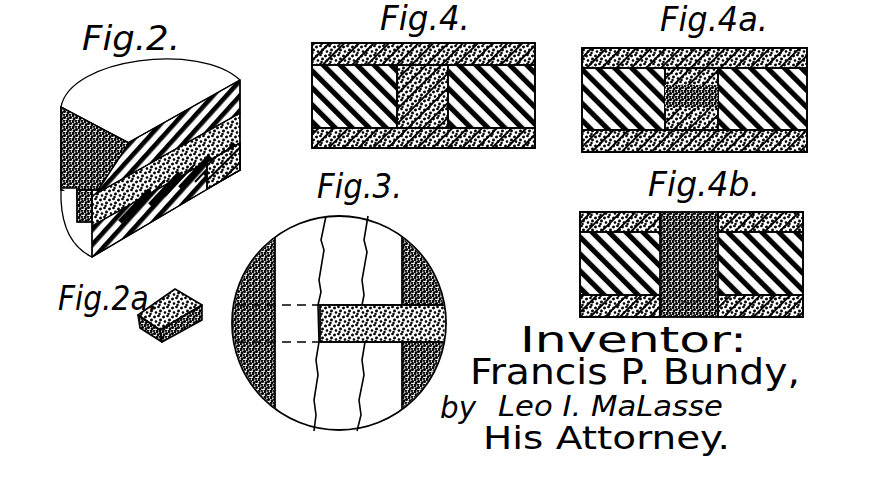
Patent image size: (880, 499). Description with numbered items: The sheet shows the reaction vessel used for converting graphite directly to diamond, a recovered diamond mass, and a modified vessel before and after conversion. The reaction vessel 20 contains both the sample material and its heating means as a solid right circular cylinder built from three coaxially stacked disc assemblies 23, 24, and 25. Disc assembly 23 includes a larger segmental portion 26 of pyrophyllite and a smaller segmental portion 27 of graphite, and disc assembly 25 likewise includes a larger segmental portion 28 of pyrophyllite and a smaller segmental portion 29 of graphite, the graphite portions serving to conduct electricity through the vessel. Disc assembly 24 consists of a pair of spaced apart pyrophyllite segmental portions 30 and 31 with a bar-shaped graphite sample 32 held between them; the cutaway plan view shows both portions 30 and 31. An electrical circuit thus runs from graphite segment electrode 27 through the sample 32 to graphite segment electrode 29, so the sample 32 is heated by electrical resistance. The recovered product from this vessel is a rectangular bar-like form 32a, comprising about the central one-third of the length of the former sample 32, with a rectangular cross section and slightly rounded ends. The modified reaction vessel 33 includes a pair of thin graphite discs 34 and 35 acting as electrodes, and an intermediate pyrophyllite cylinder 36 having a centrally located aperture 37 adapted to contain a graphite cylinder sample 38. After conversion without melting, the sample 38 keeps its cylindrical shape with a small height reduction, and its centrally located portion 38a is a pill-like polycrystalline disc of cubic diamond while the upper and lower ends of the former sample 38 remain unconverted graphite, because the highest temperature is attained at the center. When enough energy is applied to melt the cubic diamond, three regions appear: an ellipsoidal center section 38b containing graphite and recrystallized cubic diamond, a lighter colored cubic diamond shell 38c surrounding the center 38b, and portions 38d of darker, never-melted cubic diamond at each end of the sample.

In FIG. 2, the reaction vessel 20 is at (221, 57).
In FIG. 2, the disc assembly 23 is at (246, 92).
In FIG. 2, the disc assembly 24 is at (244, 120).
In FIG. 2, the disc assembly 25 is at (246, 147).
In FIG. 2, the segmental portion 26 is at (103, 100).
In FIG. 3, the segmental portion 26 is at (302, 407).
In FIG. 2, the segmental portion 27 is at (73, 135).
In FIG. 3, the segmental portion 27 is at (253, 352).
In FIG. 2, the segmental portion 28 is at (157, 212).
In FIG. 3, the segmental portion 28 is at (380, 398).
In FIG. 2, the segmental portion 29 is at (222, 178).
In FIG. 3, the segmental portion 29 is at (447, 360).
In FIG. 2, the segmental portion 30 is at (67, 187).
In FIG. 3, the segmental portion 30 is at (340, 233).
In FIG. 3, the segmental portion 31 is at (340, 412).
In FIG. 2, the graphite sample 32 is at (87, 203).
In FIG. 3, the graphite sample 32 is at (447, 320).
In FIG. 2A, the rectangular bar-like form 32a is at (138, 333).
In FIG. 4, the reaction vessel 33 is at (528, 35).
In FIG. 4A, the reaction vessel 33 is at (801, 46).
In FIG. 4B, the reaction vessel 33 is at (584, 213).
In FIG. 4, the graphite disc 34 is at (536, 48).
In FIG. 4A, the graphite disc 34 is at (803, 49).
In FIG. 4B, the graphite disc 34 is at (580, 223).
In FIG. 4, the graphite disc 35 is at (530, 148).
In FIG. 4A, the graphite disc 35 is at (804, 143).
In FIG. 4B, the graphite disc 35 is at (580, 305).
In FIG. 4, the intermediate pyrophyllite cylinder 36 is at (535, 97).
In FIG. 4A, the intermediate pyrophyllite cylinder 36 is at (804, 86).
In FIG. 4B, the intermediate pyrophyllite cylinder 36 is at (580, 275).
In FIG. 4, the aperture 37 is at (410, 68).
In FIG. 4, the sample 38 is at (425, 125).
In FIG. 4A, the cylindrical form 38a is at (680, 88).
In FIG. 4B, the ellipsoidal center section 38b is at (668, 258).
In FIG. 4B, the cubic diamond shell 38c is at (661, 222).
In FIG. 4B, the portions of darker cubic diamond 38d is at (712, 214).